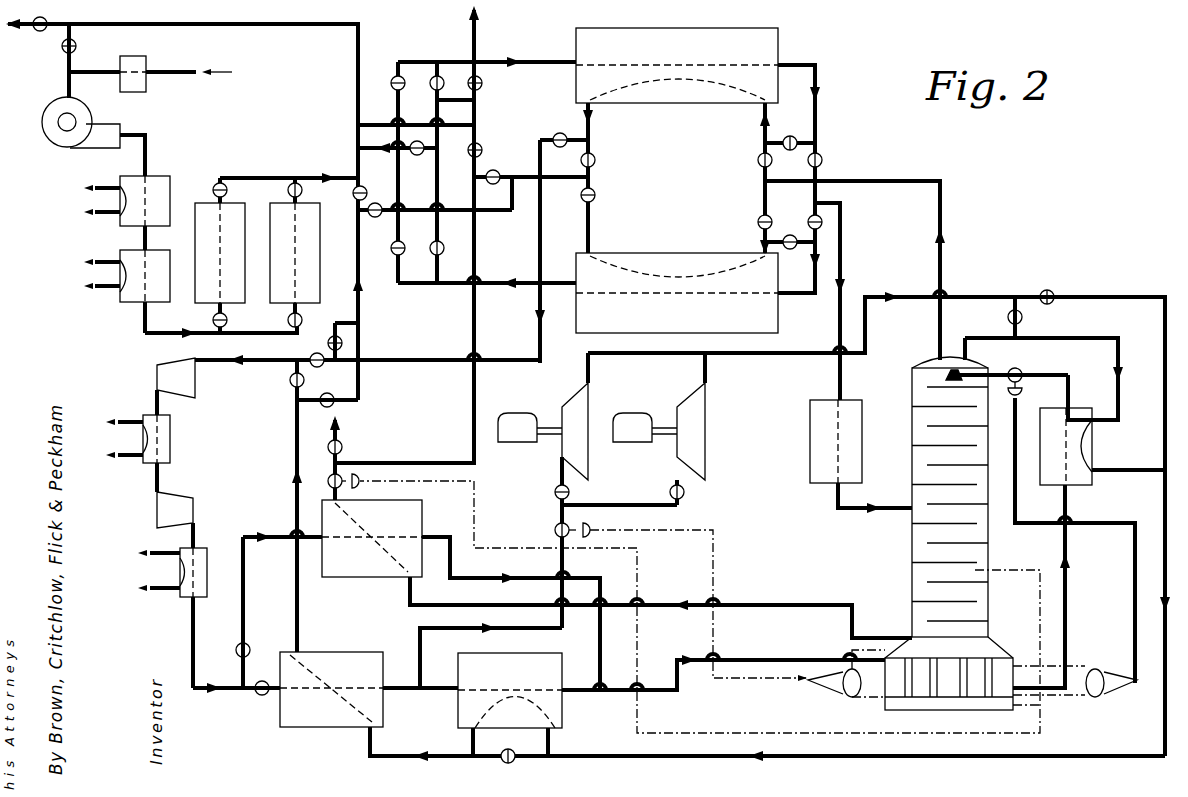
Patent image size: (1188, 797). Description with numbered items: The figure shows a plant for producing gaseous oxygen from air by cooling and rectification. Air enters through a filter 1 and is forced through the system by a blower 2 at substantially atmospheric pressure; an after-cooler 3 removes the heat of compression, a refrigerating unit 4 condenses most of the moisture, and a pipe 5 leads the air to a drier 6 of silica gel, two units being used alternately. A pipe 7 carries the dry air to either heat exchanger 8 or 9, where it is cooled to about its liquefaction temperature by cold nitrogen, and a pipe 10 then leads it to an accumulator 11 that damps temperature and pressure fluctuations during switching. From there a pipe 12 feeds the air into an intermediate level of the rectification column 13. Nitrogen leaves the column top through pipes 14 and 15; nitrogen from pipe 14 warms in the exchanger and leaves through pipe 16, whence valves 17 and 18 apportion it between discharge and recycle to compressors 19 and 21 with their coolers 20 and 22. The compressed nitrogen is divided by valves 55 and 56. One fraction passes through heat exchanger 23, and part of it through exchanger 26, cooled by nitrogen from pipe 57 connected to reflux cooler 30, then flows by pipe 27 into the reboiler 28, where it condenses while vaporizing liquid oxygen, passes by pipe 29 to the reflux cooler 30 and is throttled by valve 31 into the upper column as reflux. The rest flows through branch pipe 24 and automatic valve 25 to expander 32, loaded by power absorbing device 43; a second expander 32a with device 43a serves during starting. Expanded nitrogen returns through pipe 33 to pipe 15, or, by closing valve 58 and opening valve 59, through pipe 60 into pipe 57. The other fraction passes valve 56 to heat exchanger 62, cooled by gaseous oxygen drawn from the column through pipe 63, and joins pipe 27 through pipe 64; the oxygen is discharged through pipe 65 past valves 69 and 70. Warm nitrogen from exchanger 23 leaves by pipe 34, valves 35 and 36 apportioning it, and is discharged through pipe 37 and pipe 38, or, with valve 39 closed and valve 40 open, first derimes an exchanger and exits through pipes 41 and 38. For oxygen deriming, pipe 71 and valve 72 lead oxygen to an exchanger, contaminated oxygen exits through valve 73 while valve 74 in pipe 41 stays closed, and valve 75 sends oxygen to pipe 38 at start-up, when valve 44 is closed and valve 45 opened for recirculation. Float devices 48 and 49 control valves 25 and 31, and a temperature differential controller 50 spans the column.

The filter 1 is at (135, 88).
The blower 2 is at (62, 140).
The after-cooler 3 is at (160, 182).
The refrigerating unit 4 is at (125, 298).
The pipe 5 is at (200, 336).
The drier 6 is at (285, 300).
The pipe 7 is at (250, 178).
The heat exchanger 8 is at (590, 34).
The heat exchanger 9 is at (580, 318).
The pipe 10 is at (846, 256).
The accumulator 11 is at (808, 420).
The pipe 12 is at (832, 500).
The rectification column 13 is at (908, 552).
The pipe 14 is at (946, 204).
The pipe 15 is at (1078, 338).
The pipe 16 is at (536, 338).
The valve 17 is at (328, 343).
The valve 18 is at (322, 366).
The compressor 19 is at (160, 368).
The cooler 20 is at (170, 440).
The compressor 21 is at (155, 508).
The cooler 22 is at (208, 574).
The heat exchanger 23 is at (285, 716).
The branch pipe 24 is at (418, 632).
The valve 25 is at (555, 530).
The exchanger or liquefier 26 is at (556, 708).
The pipe 27 is at (678, 692).
The reboiler 28 is at (950, 684).
The pipe 29 is at (1072, 594).
The reflux cooler 30 is at (1048, 472).
The valve 31 is at (1022, 370).
The expander 32 is at (698, 460).
The expander 32a is at (580, 460).
The pipe 33 is at (742, 356).
The pipe 34 is at (292, 452).
The valve 35 is at (290, 382).
The valve 36 is at (336, 404).
The pipe 37 is at (362, 307).
The pipe 38 is at (252, 24).
The valve 39 is at (356, 198).
The valve 40 is at (376, 218).
The pipe 41 is at (385, 146).
The power absorbing device 43 is at (630, 412).
The power absorbing device 43a is at (510, 440).
The valve 44 is at (50, 22).
The valve 45 is at (62, 48).
The float device 48 is at (822, 690).
The float device 49 is at (1110, 690).
The temperature differential controller 50 is at (1002, 570).
The valve 55 is at (255, 694).
The valve 56 is at (247, 642).
The pipe 57 is at (845, 762).
The valve 58 is at (1008, 318).
The valve 59 is at (1052, 290).
The pipe 60 is at (1130, 297).
The heat exchanger 62 is at (330, 575).
The pipe 63 is at (752, 605).
The pipe 64 is at (600, 645).
The oxygen discharge pipe 65 is at (333, 434).
The valve 69 is at (344, 447).
The valve 70 is at (328, 481).
The pipe 71 is at (470, 392).
The valve 72 is at (495, 172).
The valve 73 is at (484, 84).
The valve 74 is at (418, 156).
The valve 75 is at (483, 150).